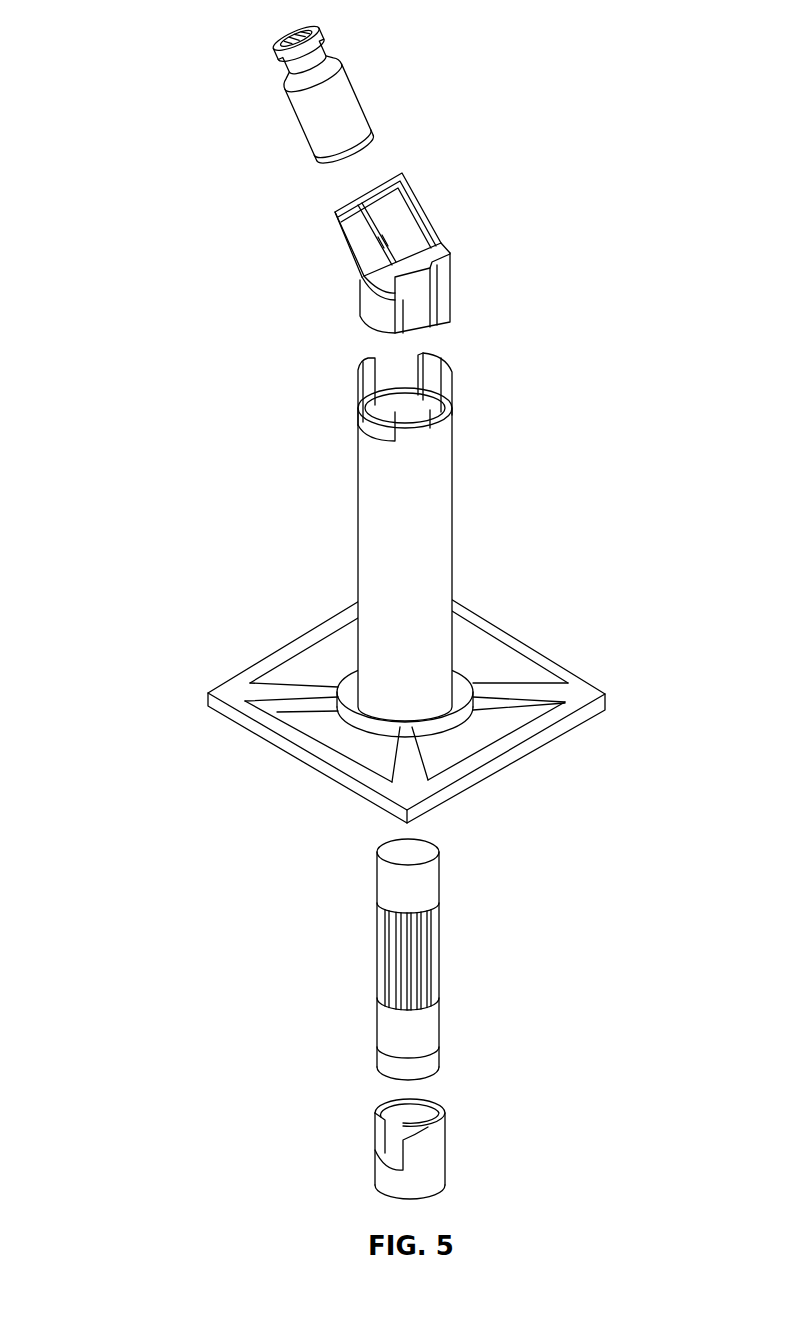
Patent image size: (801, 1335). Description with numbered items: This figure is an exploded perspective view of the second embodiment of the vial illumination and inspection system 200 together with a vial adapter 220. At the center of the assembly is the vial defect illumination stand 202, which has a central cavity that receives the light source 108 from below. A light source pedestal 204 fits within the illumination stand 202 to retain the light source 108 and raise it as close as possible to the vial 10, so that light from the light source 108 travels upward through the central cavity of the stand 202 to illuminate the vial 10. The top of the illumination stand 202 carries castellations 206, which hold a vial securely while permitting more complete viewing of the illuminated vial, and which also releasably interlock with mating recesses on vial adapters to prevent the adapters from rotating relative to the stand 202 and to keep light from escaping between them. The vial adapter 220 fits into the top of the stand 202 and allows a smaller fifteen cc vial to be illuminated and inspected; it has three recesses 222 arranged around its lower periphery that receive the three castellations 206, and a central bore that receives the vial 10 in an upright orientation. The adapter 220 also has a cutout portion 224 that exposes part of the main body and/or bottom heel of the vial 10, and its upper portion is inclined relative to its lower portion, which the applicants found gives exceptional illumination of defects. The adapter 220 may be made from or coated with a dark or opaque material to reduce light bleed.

The vial illumination and inspection system 200 is at (136, 40).
The vial 10 is at (280, 88).
The vial adapter 220 is at (413, 242).
The cutout portion 224 is at (385, 207).
The recesses 222 is at (417, 315).
The castellations 206 is at (430, 383).
The vial defect illumination stand 202 is at (358, 476).
The light source 108 is at (376, 880).
The light source pedestal 204 is at (375, 1121).